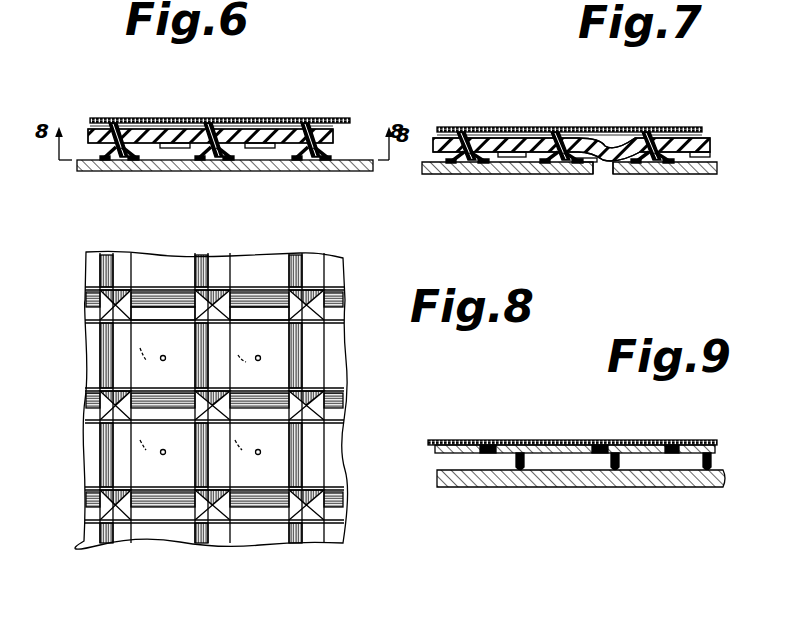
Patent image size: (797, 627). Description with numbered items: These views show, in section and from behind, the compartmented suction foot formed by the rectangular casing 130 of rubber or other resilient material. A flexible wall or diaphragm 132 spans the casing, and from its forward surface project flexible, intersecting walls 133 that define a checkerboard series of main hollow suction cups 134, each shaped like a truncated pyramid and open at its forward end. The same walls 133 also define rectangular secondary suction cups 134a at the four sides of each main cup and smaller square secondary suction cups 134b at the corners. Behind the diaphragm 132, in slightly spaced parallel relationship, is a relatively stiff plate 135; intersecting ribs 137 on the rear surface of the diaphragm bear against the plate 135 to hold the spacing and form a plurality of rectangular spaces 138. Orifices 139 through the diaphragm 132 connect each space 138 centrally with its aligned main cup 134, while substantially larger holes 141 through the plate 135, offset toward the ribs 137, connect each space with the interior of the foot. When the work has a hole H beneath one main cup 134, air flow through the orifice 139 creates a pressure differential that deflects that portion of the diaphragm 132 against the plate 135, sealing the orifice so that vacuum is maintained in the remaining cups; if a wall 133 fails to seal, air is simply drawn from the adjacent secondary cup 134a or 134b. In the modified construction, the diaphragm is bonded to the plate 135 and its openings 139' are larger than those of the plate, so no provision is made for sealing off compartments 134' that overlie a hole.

In FIG. 6, the rectangular casing 130 is at (340, 140).
In FIG. 6, the flexible wall or diaphragm 132 is at (205, 130).
In FIG. 7, the flexible wall or diaphragm 132 is at (495, 140).
In FIG. 8, the flexible wall or diaphragm 132 is at (185, 258).
In FIG. 9, the flexible wall or diaphragm 132 is at (437, 447).
In FIG. 6, the flexible intersecting walls 133 is at (115, 159).
In FIG. 7, the flexible intersecting walls 133 is at (455, 162).
In FIG. 8, the flexible intersecting walls 133 is at (118, 258).
In FIG. 6, the main hollow compartments or suction cups 134 is at (220, 185).
In FIG. 7, the main hollow compartments or suction cups 134 is at (576, 197).
In FIG. 8, the main hollow compartments or suction cups 134 is at (210, 410).
In FIG. 8, the rectangular secondary compartments or suction cups 134a is at (108, 345).
In FIG. 8, the smaller secondary square compartments or suction cups 134b is at (345, 275).
In FIG. 9, the compartments 134' is at (583, 499).
In FIG. 6, the relatively stiff plate 135 is at (275, 129).
In FIG. 7, the relatively stiff plate 135 is at (632, 140).
In FIG. 9, the relatively stiff plate 135 is at (545, 445).
In FIG. 6, the intersecting ribs 137 is at (113, 124).
In FIG. 7, the intersecting ribs 137 is at (460, 138).
In FIG. 8, the intersecting ribs 137 is at (230, 268).
In FIG. 6, the rectangular spaces 138 is at (170, 118).
In FIG. 7, the rectangular spaces 138 is at (520, 127).
In FIG. 6, the orifices 139 is at (218, 172).
In FIG. 7, the orifices 139 is at (627, 162).
In FIG. 8, the orifices 139 is at (219, 413).
In FIG. 9, the openings in the diaphragm 139' is at (604, 490).
In FIG. 6, the holes 141 is at (128, 120).
In FIG. 7, the holes 141 is at (468, 127).
In FIG. 8, the holes 141 is at (148, 352).
In FIG. 9, the holes 141 is at (488, 445).
In FIG. 7, the hole H is at (605, 174).